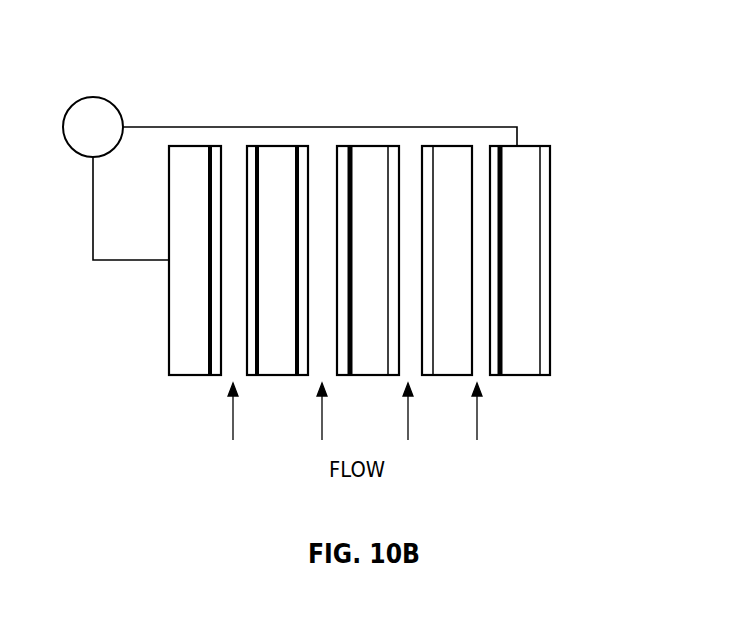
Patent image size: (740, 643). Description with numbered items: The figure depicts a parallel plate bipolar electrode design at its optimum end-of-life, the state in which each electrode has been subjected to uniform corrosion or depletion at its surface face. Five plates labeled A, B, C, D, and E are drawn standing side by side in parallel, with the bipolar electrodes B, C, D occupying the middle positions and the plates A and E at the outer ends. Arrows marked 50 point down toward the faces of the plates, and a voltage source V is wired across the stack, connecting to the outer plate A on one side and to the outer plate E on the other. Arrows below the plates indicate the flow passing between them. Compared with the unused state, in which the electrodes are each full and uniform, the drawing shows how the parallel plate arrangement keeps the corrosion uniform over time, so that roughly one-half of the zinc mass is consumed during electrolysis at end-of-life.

The electrode / filter layer 50 is at (359, 204).
The filter stage A is at (195, 260).
The bipolar electrode B is at (277, 260).
The bipolar electrode C is at (368, 260).
The bipolar electrode D is at (447, 260).
The filter stage E is at (520, 260).
The voltage source / voltmeter V is at (93, 127).